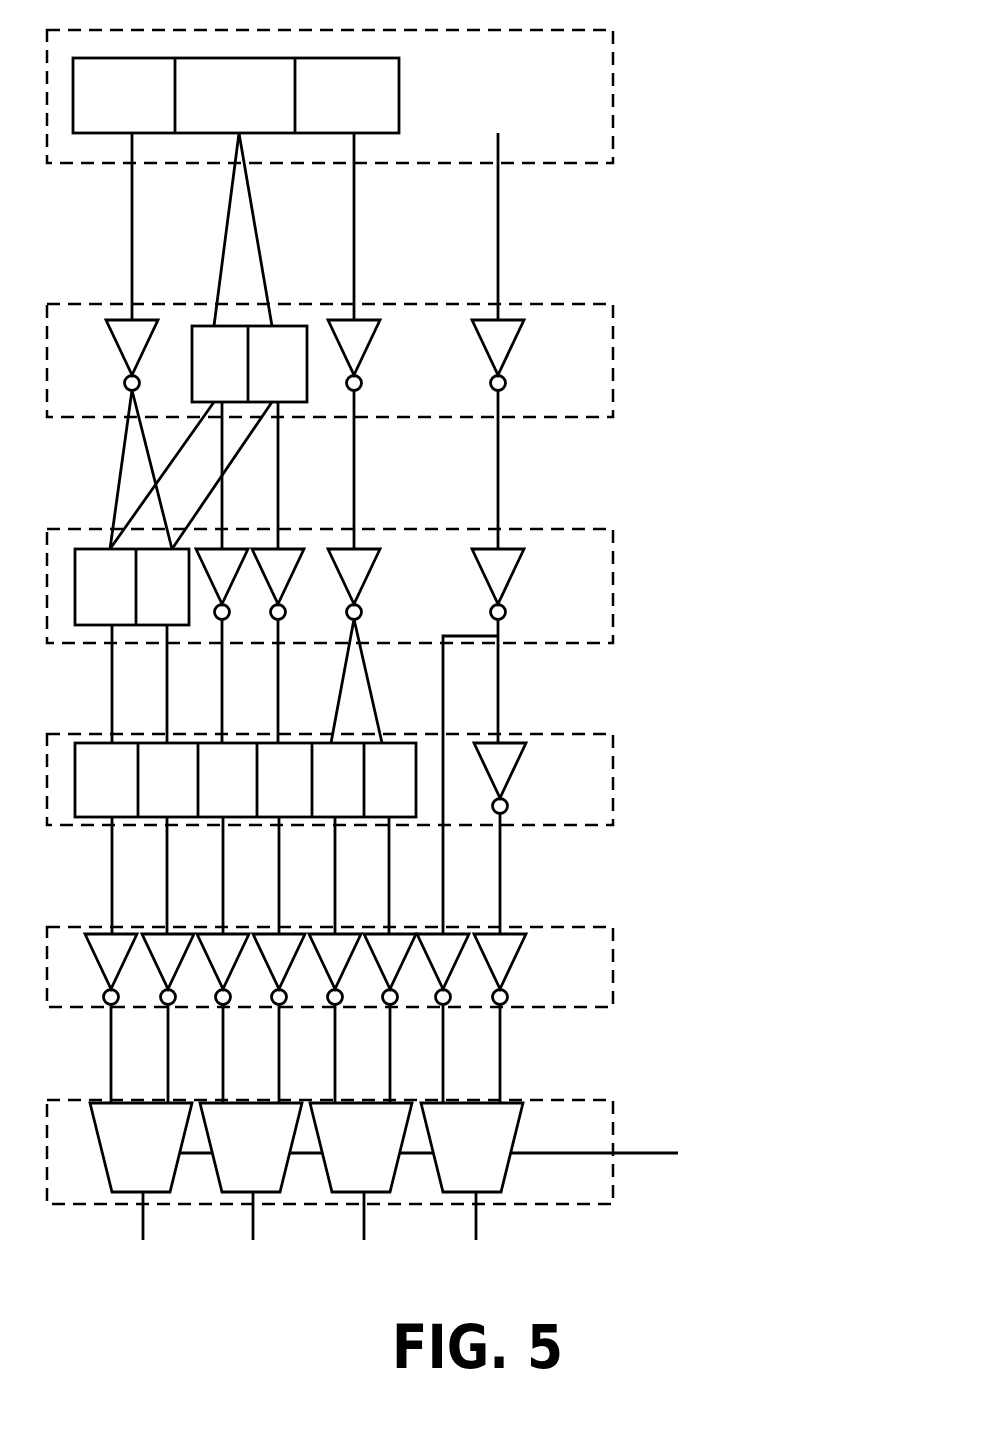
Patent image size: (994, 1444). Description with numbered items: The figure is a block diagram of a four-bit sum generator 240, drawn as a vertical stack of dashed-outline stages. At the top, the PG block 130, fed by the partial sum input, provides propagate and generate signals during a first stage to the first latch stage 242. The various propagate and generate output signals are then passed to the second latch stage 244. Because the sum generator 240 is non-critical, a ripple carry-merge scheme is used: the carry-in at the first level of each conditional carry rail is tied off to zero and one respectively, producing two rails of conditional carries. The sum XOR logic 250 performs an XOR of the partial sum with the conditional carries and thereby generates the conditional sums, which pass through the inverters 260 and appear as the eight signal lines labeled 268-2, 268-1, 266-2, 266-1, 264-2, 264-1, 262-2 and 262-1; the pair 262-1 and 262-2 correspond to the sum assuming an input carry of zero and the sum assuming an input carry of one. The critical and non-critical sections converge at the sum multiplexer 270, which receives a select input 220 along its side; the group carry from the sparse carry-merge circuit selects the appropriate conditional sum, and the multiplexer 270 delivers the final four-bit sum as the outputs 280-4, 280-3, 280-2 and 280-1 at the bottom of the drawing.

The PG block 130 is at (613, 84).
The first latch stage (CC1) 242 is at (613, 335).
The second latch stage (CC2) 244 is at (613, 562).
The sum XOR logic 250 is at (613, 767).
The inverters 260 is at (613, 962).
The sum multiplexer (MUX) 270 is at (613, 1108).
The select signal 220 is at (645, 1138).
The 4-bit sum generator 240 is at (838, 1229).
The conditional sum 268-2 is at (127, 1053).
The conditional sum 268-1 is at (184, 1053).
The conditional sum 266-2 is at (239, 1053).
The conditional sum 266-1 is at (295, 1053).
The conditional sum 264-2 is at (351, 1053).
The conditional sum 264-1 is at (406, 1053).
The conditional sum Sum_i,1 262-2 is at (459, 1053).
The conditional sum Sum_i,0 262-1 is at (516, 1053).
The final sum bit 280-4 is at (100, 1216).
The final sum bit 280-3 is at (210, 1216).
The final sum bit 280-2 is at (321, 1216).
The final sum bit 280-1 is at (433, 1216).